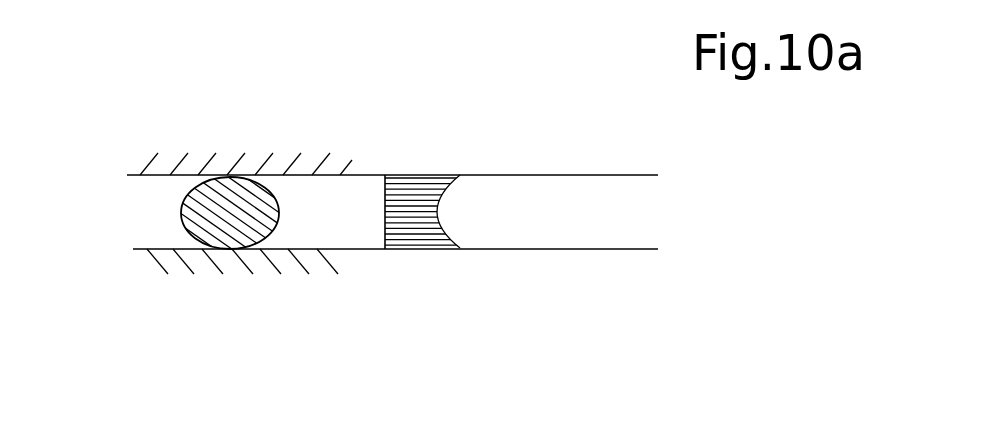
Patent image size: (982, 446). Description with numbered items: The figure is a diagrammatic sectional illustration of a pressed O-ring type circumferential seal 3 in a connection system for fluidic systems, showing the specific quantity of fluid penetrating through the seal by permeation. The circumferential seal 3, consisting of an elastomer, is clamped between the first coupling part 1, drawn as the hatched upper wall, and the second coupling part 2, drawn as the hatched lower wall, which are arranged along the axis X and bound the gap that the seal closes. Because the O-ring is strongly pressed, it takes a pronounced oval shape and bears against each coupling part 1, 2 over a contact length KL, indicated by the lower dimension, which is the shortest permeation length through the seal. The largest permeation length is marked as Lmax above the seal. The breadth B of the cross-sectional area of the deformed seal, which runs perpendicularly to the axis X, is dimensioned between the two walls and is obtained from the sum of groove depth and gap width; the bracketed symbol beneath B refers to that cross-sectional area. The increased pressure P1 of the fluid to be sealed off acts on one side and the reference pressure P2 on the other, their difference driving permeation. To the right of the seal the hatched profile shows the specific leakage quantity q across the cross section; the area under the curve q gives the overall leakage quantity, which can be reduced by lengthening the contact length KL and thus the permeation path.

The first coupling part 1 is at (401, 160).
The second coupling part 2 is at (396, 305).
The circumferential seal 3 is at (275, 212).
The specific leakage quantity q is at (440, 212).
The breadth of the cross-sectional area B is at (629, 125).
The largest permeation length Lmax is at (179, 237).
The contact length KL is at (243, 249).
The increased pressure of the fluid to be sealed off P1 is at (580, 233).
The reference pressure P2 is at (140, 225).
The axis X is at (493, 352).